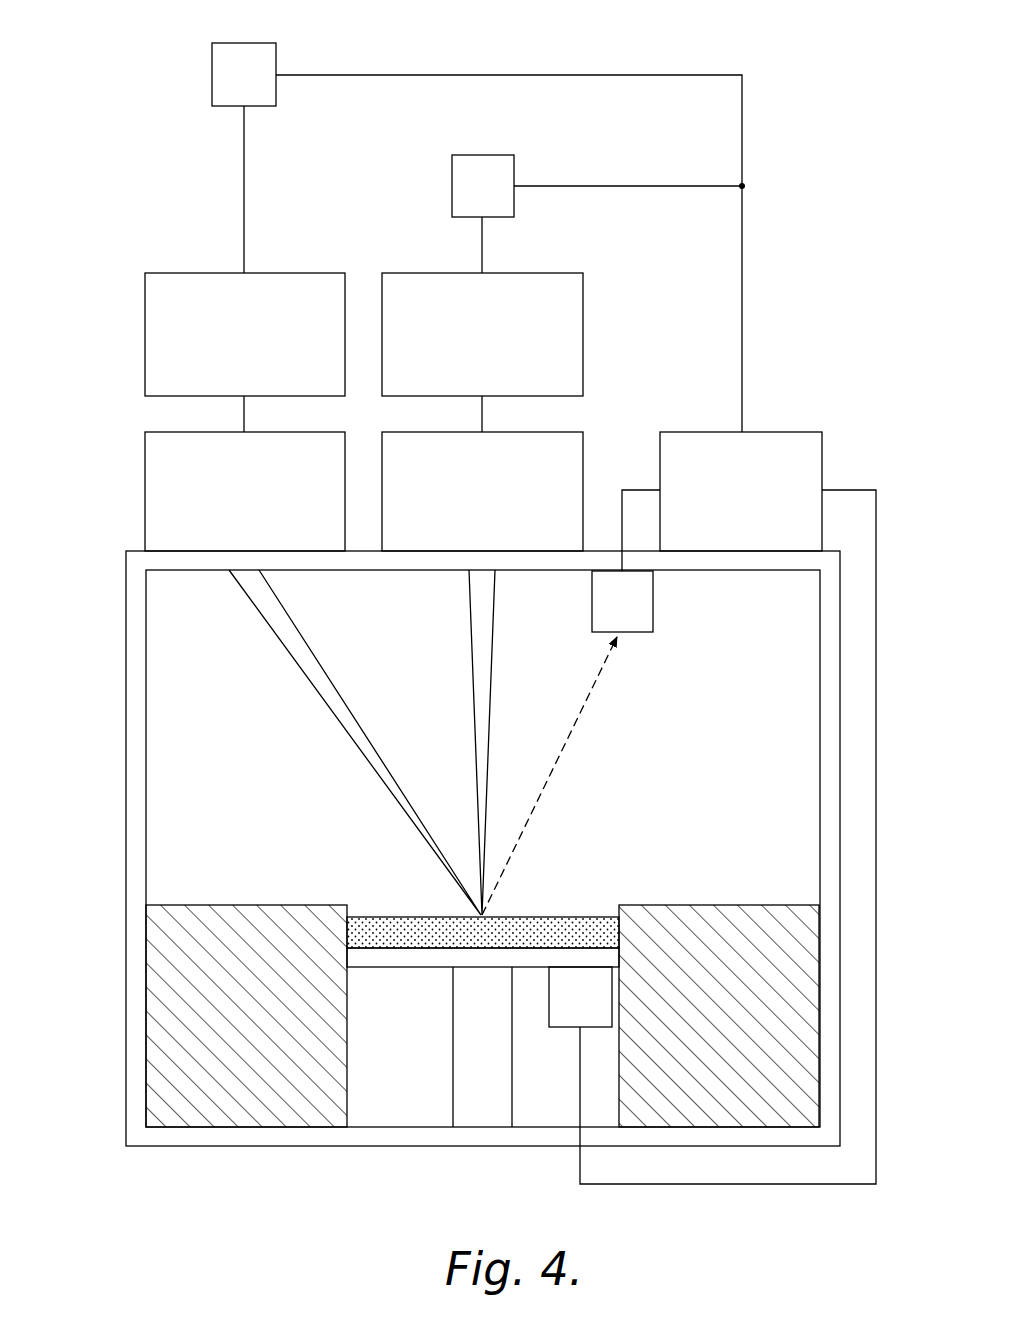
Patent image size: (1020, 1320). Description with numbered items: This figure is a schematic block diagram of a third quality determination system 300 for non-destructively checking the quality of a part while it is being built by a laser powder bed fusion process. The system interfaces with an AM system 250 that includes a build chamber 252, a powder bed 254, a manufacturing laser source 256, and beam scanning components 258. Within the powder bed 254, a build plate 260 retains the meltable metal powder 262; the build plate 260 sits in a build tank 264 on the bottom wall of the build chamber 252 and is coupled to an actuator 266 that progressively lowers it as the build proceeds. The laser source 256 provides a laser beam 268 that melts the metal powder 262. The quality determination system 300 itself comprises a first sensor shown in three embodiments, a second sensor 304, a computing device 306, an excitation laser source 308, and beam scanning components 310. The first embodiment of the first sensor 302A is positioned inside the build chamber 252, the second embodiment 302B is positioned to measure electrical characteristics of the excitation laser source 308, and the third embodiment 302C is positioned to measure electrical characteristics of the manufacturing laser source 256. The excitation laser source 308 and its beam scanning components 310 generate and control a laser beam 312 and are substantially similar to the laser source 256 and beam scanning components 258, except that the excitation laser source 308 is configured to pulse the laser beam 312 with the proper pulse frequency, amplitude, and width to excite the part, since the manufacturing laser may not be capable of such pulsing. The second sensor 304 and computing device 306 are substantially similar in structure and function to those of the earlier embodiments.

The third quality determination system 300 is at (812, 272).
The first sensor 302A is at (647, 607).
The first sensor 302B is at (262, 47).
The first sensor 302C is at (500, 160).
The second sensor 304 is at (565, 1022).
The computing device 306 is at (807, 437).
The excitation laser source 308 is at (150, 290).
The beam scanning components 310 is at (150, 441).
The laser beam 312 is at (330, 703).
The AM system 250 is at (102, 577).
The build chamber 252 is at (133, 797).
The powder bed 254 is at (548, 872).
The laser source 256 is at (560, 280).
The beam scanning components 258 is at (576, 440).
The build plate 260 is at (433, 957).
The metal powder 262 is at (399, 920).
The build tank 264 is at (412, 1138).
The actuator 266 is at (468, 1075).
The laser beam 268 is at (476, 628).